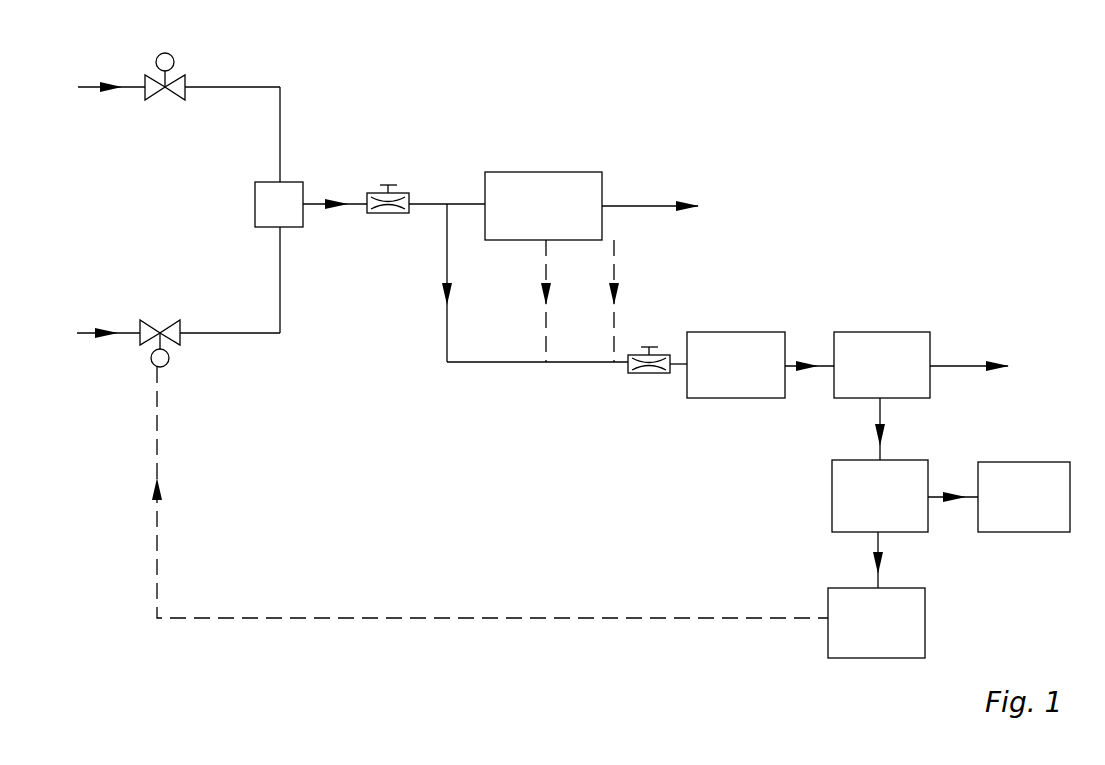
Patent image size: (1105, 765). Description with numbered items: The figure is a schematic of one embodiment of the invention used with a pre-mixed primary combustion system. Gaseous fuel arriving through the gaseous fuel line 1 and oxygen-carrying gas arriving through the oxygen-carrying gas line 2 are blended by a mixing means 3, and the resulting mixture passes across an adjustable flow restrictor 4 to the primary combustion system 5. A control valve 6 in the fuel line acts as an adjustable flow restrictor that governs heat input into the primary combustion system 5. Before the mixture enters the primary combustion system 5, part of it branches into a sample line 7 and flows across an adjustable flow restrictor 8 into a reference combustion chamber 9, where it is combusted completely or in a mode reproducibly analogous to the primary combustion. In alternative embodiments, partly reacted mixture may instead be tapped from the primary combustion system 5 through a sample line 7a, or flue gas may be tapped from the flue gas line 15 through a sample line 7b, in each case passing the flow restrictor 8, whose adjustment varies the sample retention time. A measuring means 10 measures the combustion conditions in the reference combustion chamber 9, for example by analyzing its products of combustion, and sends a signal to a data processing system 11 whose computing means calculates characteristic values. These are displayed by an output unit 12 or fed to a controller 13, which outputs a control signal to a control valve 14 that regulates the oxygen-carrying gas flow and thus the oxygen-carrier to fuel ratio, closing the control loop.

The gaseous fuel line 1 is at (130, 86).
The oxygen-carrying gas line 2 is at (130, 336).
The mixing means 3 is at (255, 204).
The adjustable flow restrictor 4 is at (376, 214).
The primary combustion system 5 is at (549, 172).
The control valve 6 is at (182, 84).
The sample line 7 is at (447, 264).
The sample line 7a is at (543, 274).
The sample line 7b is at (618, 270).
The adjustable flow restrictor 8 is at (655, 373).
The reference combustion chamber 9 is at (736, 332).
The measuring means 10 is at (878, 332).
The data processing system 11 is at (832, 495).
The output unit 12 is at (1018, 532).
The controller 13 is at (872, 658).
The control valve 14 is at (180, 338).
The flue gas line 15 is at (665, 205).